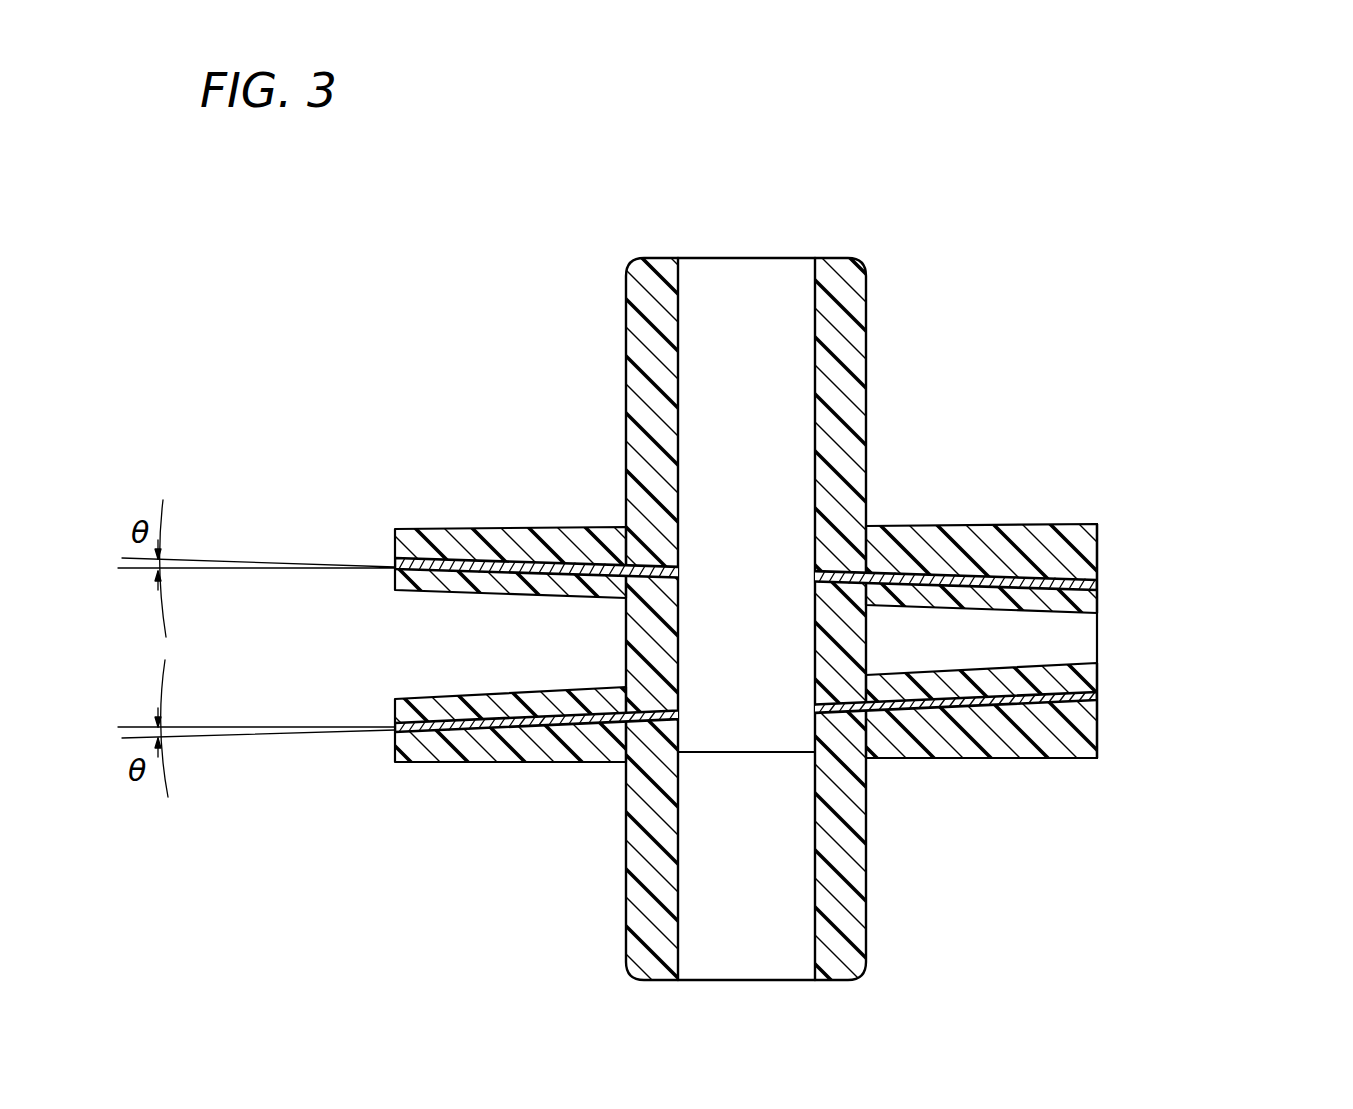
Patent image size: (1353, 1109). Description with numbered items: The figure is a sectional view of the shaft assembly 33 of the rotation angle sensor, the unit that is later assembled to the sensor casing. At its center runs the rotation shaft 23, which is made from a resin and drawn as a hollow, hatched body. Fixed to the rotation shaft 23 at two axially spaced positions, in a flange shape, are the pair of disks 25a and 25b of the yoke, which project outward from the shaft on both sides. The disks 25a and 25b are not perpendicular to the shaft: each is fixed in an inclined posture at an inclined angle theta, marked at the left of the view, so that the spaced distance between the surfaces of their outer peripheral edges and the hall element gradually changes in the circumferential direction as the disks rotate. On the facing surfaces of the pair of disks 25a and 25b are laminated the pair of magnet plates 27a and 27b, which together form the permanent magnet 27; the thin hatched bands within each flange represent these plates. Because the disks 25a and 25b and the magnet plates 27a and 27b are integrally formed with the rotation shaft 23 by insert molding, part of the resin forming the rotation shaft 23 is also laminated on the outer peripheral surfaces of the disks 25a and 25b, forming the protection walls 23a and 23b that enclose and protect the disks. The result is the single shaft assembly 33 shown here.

The shaft assembly 33 is at (868, 253).
The rotation shaft 23 is at (866, 323).
The protection wall 23a is at (937, 540).
The protection wall 23b is at (953, 742).
The disk 25a is at (1004, 578).
The disk 25b is at (1024, 702).
The magnet plate 27a is at (1080, 621).
The magnet plate 27b is at (1080, 652).
The permanent magnet 27 is at (1270, 565).